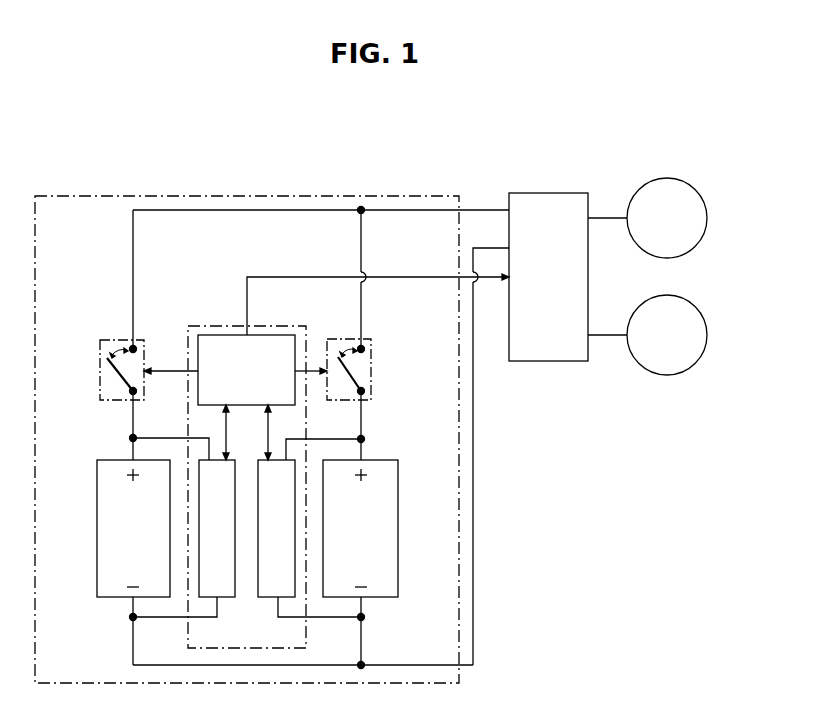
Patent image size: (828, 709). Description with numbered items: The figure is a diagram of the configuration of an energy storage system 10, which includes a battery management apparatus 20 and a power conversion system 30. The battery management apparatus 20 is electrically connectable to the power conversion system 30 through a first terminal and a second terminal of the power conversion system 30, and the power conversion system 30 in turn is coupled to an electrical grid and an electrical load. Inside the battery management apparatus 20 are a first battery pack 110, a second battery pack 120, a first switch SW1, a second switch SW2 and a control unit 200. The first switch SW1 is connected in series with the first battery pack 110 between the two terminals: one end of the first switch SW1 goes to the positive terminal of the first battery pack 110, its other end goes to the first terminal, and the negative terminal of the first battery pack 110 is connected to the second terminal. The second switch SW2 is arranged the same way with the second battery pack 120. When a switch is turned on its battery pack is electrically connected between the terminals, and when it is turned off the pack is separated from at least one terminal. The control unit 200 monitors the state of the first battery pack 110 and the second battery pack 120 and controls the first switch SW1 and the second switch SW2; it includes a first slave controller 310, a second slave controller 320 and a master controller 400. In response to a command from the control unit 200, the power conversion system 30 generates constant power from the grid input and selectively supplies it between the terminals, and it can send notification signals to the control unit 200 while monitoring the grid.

The energy storage system 10 is at (153, 137).
The battery management apparatus 20 is at (90, 196).
The power conversion system 30 is at (550, 193).
The first battery pack 110 is at (97, 497).
The second battery pack 120 is at (398, 497).
The control unit 200 is at (207, 326).
The first slave controller 310 is at (229, 598).
The second slave controller 320 is at (285, 598).
The master controller 400 is at (288, 326).
The first switch SW1 is at (100, 371).
The second switch SW2 is at (371, 371).